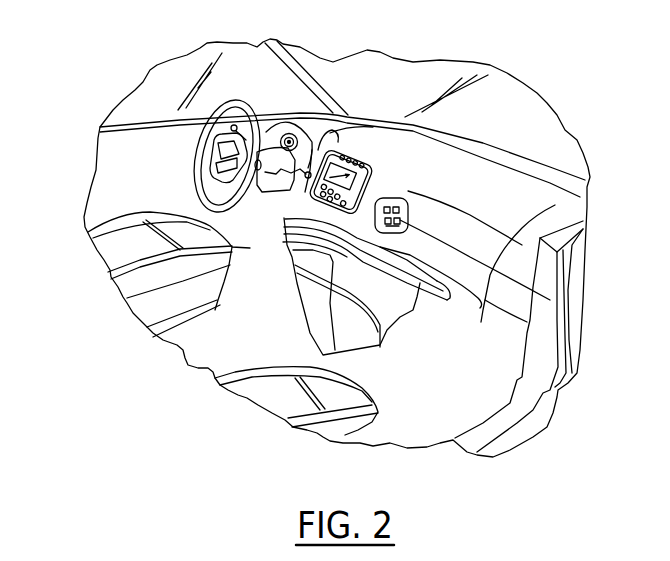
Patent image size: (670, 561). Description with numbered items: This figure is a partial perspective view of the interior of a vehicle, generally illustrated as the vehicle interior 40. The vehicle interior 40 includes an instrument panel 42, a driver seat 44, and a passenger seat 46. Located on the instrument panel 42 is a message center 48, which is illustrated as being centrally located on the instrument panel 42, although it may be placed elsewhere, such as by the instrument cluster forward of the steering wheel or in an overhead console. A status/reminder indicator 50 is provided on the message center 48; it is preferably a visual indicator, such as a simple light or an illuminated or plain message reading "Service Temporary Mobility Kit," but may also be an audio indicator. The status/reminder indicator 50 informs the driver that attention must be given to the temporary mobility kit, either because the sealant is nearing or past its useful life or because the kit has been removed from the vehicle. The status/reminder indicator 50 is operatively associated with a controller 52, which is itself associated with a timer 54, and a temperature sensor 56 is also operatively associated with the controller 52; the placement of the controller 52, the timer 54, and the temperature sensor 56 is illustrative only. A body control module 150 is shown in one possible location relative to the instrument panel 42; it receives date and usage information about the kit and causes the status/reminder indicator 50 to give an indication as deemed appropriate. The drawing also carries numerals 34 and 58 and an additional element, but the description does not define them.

The center console 34 is at (358, 326).
The vehicle interior 40 is at (153, 44).
The instrument panel 42 is at (528, 213).
The driver seat 44 is at (107, 250).
The passenger seat 46 is at (253, 398).
The message center 48 is at (340, 150).
The status/reminder indicator 50 is at (377, 167).
The controller 52 is at (407, 197).
The timer 54 is at (443, 300).
The temperature sensor 56 is at (408, 217).
The control buttons 58 is at (408, 210).
The body control module 150 is at (550, 300).